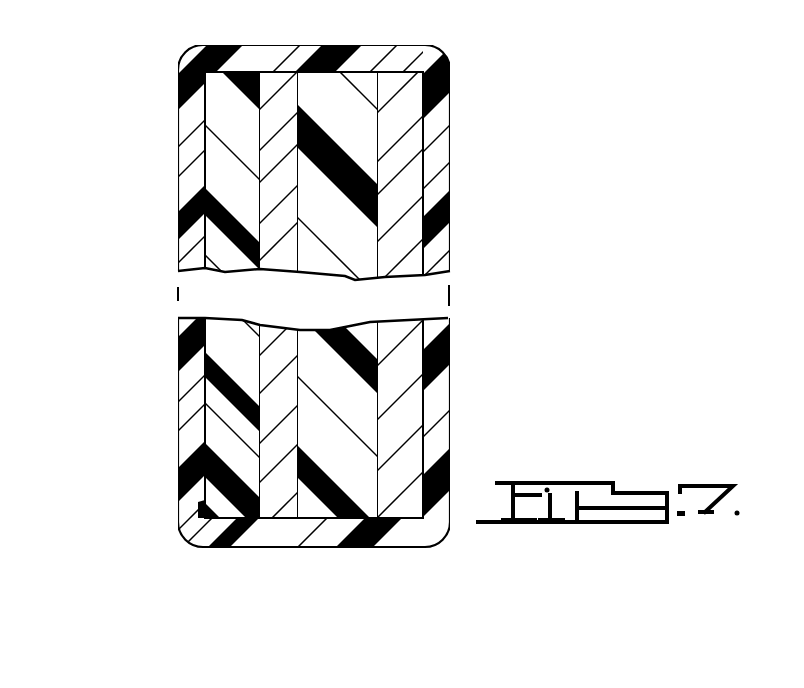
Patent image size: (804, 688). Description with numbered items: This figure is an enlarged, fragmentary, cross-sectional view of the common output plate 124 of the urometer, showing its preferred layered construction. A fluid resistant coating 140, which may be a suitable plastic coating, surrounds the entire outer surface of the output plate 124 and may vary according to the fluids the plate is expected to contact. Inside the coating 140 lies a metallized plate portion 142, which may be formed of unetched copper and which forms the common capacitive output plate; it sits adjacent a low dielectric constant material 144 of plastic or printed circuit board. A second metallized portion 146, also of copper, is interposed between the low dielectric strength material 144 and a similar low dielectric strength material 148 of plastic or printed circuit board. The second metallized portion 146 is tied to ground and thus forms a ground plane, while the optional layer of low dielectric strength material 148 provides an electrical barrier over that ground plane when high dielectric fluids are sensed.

The output plate 124 is at (146, 97).
The fluid resistant coating 140 is at (190, 137).
The metallized plate portion 142 is at (215, 172).
The low dielectric constant material 144 is at (282, 100).
The second metallized portion 146 is at (353, 113).
The low dielectric strength material 148 is at (412, 97).